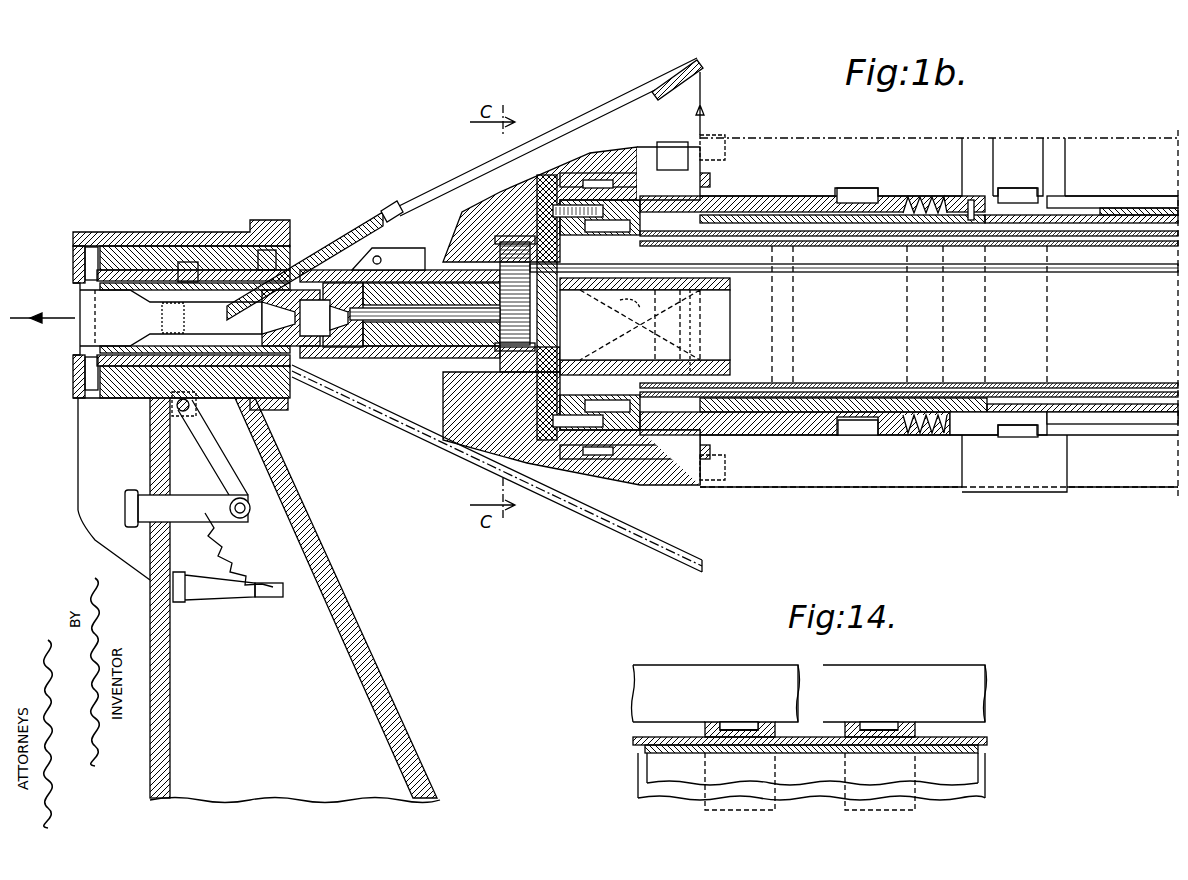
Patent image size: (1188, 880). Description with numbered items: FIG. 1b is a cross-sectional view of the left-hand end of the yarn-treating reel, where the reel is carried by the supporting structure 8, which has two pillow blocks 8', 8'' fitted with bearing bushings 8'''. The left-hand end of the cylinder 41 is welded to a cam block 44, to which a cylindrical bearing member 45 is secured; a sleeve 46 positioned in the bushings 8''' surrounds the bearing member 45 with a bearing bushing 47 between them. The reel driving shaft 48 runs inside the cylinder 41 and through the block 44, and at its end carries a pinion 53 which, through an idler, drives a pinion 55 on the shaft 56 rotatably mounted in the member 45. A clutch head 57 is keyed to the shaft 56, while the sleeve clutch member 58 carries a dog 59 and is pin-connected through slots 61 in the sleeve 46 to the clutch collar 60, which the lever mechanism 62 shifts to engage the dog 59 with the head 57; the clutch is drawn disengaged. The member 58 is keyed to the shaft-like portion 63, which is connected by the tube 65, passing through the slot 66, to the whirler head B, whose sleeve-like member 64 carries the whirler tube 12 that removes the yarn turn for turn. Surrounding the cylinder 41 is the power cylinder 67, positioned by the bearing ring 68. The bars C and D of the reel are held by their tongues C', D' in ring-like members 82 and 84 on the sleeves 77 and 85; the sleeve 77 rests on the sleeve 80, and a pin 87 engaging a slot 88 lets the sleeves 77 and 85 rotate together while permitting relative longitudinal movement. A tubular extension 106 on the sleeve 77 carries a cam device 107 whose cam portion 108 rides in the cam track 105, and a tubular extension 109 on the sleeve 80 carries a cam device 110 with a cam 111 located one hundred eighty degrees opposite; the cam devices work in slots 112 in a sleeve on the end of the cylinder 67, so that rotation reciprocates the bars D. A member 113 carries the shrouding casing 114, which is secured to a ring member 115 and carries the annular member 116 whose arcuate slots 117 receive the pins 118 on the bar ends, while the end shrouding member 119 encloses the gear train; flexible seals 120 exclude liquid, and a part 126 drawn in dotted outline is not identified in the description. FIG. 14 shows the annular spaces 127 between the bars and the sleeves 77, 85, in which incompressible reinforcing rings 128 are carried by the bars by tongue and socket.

In FIG. 1b, the supporting structure 8 is at (348, 560).
In FIG. 1b, the pillow block 8' is at (120, 418).
In FIG. 1b, the pillow block 8'' is at (292, 410).
In FIG. 1b, the bearing bushing 8''' is at (193, 269).
In FIG. 1b, the whirler tube 12 is at (683, 68).
In FIG. 1b, the cylinder 41 is at (880, 385).
In FIG. 1b, the cam block 44 is at (727, 368).
In FIG. 1b, the bearing member 45 is at (432, 330).
In FIG. 1b, the sleeve 46 is at (218, 280).
In FIG. 1b, the bearing bushing 47 is at (428, 280).
In FIG. 1b, the reel driving shaft 48 is at (825, 272).
In FIG. 1b, the pinion 53 is at (477, 252).
In FIG. 1b, the pinion 55 is at (530, 333).
In FIG. 1b, the shaft 56 is at (390, 313).
In FIG. 1b, the head 57 is at (350, 380).
In FIG. 1b, the sleeve clutch member 58 is at (318, 380).
In FIG. 1b, the dog 59 is at (300, 370).
In FIG. 1b, the clutch collar 60 is at (187, 262).
In FIG. 1b, the slots 61 is at (208, 380).
In FIG. 1b, the lever mechanism 62 is at (198, 497).
In FIG. 1b, the shaft-like portion 63 is at (287, 317).
In FIG. 1b, the sleeve-like member 64 is at (393, 415).
In FIG. 1b, the tube 65 is at (390, 212).
In FIG. 1b, the slot 66 is at (265, 270).
In FIG. 1b, the power cylinder 67 is at (1107, 393).
In FIG. 1b, the bearing ring 68 is at (693, 380).
In FIG. 1b, the sleeve 77 is at (1062, 410).
In FIG. 14, the sleeve 77 is at (728, 752).
In FIG. 1b, the sleeve 80 is at (555, 435).
In FIG. 1b, the ring-like member 82 is at (827, 197).
In FIG. 1b, the ring-like member 84 is at (1042, 197).
In FIG. 1b, the sleeve 85 is at (1138, 412).
In FIG. 14, the sleeve 85 is at (800, 746).
In FIG. 1b, the pin 87 is at (972, 223).
In FIG. 1b, the slot 88 is at (1023, 223).
In FIG. 1b, the cam track 105 is at (613, 303).
In FIG. 1b, the tubular extension piece 106 is at (760, 437).
In FIG. 1b, the cam device 107 is at (600, 445).
In FIG. 1b, the cam portion 108 is at (613, 380).
In FIG. 1b, the tubular extension member 109 is at (603, 160).
In FIG. 1b, the cam device 110 is at (567, 207).
In FIG. 1b, the cam 111 is at (578, 310).
In FIG. 1b, the slots 112 is at (585, 406).
In FIG. 1b, the member 113 is at (488, 387).
In FIG. 1b, the shrouding casing 114 is at (577, 437).
In FIG. 1b, the ring member 115 is at (713, 437).
In FIG. 1b, the annular ringlike member 116 is at (632, 435).
In FIG. 1b, the arcuate slots 117 is at (607, 453).
In FIG. 1b, the pins 118 is at (682, 450).
In FIG. 1b, the end shrouding member 119 is at (490, 410).
In FIG. 1b, the flexible seals 120 is at (927, 433).
In FIG. 1b, the block 126 is at (653, 480).
In FIG. 1b, the annular spaces 127 is at (1100, 427).
In FIG. 14, the annular spaces 127 is at (960, 728).
In FIG. 14, the reinforcing rings 128 is at (905, 722).
In FIG. 1b, the whirler device B is at (349, 226).
In FIG. 1b, the bars C is at (1016, 309).
In FIG. 14, the bars C is at (669, 651).
In FIG. 1b, the tongues C' is at (869, 310).
In FIG. 14, the tongues C' is at (741, 703).
In FIG. 1b, the bars D is at (1012, 305).
In FIG. 14, the bars D is at (907, 649).
In FIG. 1b, the tongues D' is at (1032, 311).
In FIG. 14, the tongues D' is at (879, 705).